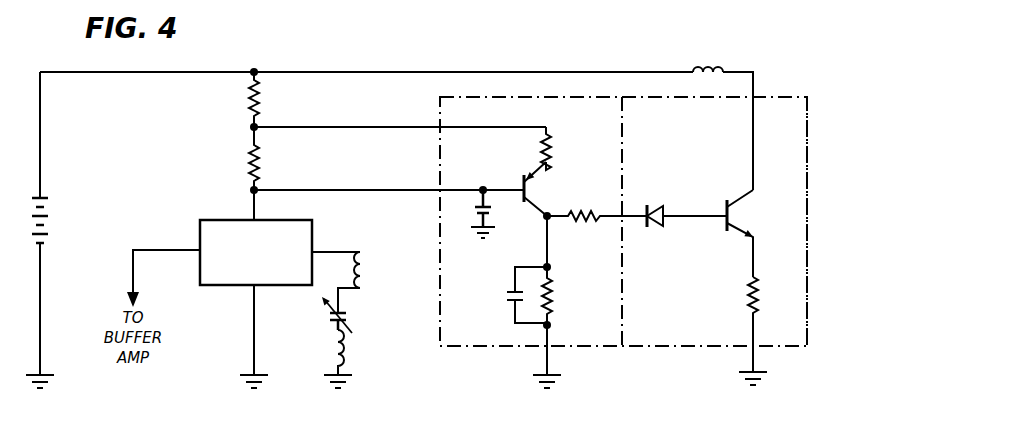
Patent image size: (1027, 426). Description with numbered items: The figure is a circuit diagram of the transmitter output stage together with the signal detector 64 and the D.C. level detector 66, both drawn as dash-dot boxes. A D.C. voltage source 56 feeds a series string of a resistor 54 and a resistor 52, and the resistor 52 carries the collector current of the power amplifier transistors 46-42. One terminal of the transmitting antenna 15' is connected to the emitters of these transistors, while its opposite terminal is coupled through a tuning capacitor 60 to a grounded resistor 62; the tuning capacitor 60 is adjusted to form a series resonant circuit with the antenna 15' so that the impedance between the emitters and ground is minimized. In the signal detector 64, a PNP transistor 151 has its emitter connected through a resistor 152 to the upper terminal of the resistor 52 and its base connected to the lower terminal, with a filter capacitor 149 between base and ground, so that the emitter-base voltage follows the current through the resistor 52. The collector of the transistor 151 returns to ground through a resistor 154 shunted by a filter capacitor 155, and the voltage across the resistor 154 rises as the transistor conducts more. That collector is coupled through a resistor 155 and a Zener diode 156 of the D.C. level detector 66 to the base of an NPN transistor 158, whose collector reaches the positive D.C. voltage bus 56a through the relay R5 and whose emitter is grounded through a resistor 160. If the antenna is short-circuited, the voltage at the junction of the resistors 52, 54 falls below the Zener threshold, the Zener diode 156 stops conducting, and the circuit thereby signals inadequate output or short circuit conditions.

The D.C. voltage source 56 is at (54, 222).
The resistor 54 is at (260, 100).
The resistor 52 is at (260, 160).
The positive D.C. voltage bus 56a is at (455, 72).
The power amplifier transistors 46-42 is at (218, 220).
The transmitting antenna 15' is at (341, 266).
The tuning capacitor 60 is at (328, 316).
The resistor 62 is at (342, 351).
The signal detector 64 is at (438, 98).
The D.C. level detector 66 is at (810, 108).
The resistor 152 is at (588, 137).
The PNP transistor 151 is at (522, 178).
The filter capacitor 149 is at (498, 208).
The filter capacitor / resistor 155 is at (598, 194).
The resistor 154 is at (554, 303).
The Zener diode 156 is at (656, 210).
The NPN transistor 158 is at (728, 224).
The resistor 160 is at (750, 294).
The relay R5 is at (692, 70).